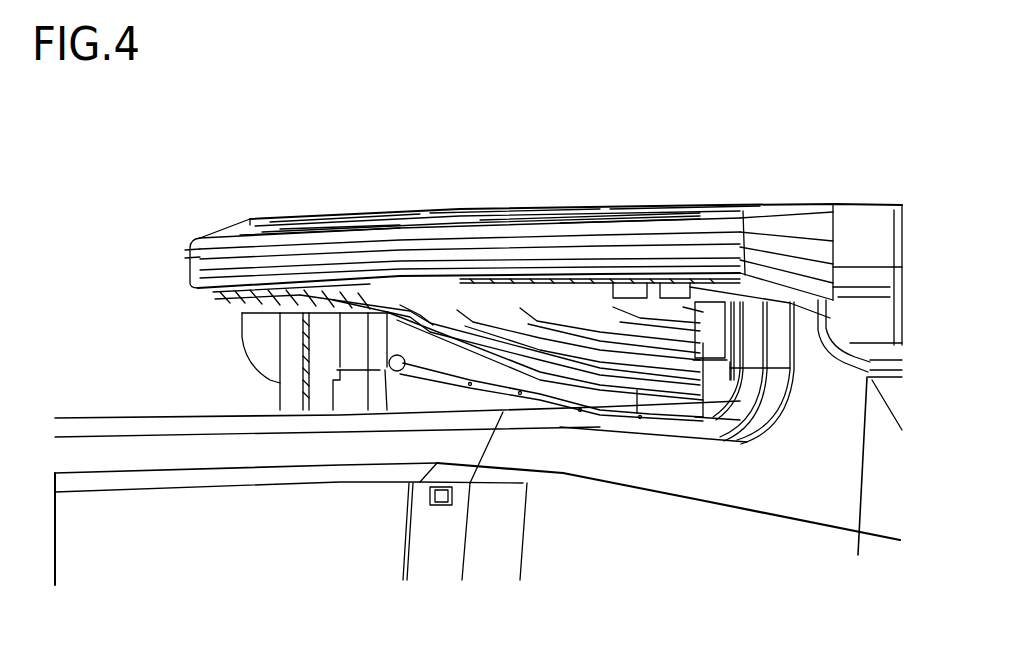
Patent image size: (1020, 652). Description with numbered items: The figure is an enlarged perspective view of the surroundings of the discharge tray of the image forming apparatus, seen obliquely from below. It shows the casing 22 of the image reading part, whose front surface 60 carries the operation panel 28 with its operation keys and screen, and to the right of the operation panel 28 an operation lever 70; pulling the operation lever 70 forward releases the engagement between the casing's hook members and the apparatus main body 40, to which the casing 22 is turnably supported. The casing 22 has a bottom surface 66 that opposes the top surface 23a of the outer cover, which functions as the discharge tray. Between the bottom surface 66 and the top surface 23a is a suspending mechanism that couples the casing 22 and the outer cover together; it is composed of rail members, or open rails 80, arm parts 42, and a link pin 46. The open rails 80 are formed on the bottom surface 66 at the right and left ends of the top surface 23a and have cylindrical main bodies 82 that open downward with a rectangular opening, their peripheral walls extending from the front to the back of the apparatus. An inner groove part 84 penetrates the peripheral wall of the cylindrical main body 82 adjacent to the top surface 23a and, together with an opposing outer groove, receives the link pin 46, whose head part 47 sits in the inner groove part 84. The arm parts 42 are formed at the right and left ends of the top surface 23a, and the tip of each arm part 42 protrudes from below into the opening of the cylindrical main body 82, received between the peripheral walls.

The casing 22 is at (846, 203).
The top surface of the outer cover 23a is at (183, 416).
The operation panel 28 is at (488, 230).
The apparatus main body 40 is at (137, 523).
The arm parts 42 is at (343, 402).
The link pin 46 is at (399, 372).
The head part 47 is at (362, 447).
The front surface 60 is at (887, 223).
The bottom surface 66 is at (432, 289).
The operation lever 70 is at (885, 382).
The rail members (open rails) 80 is at (706, 325).
The cylindrical main body 82 is at (350, 358).
The inner groove part 84 is at (520, 383).